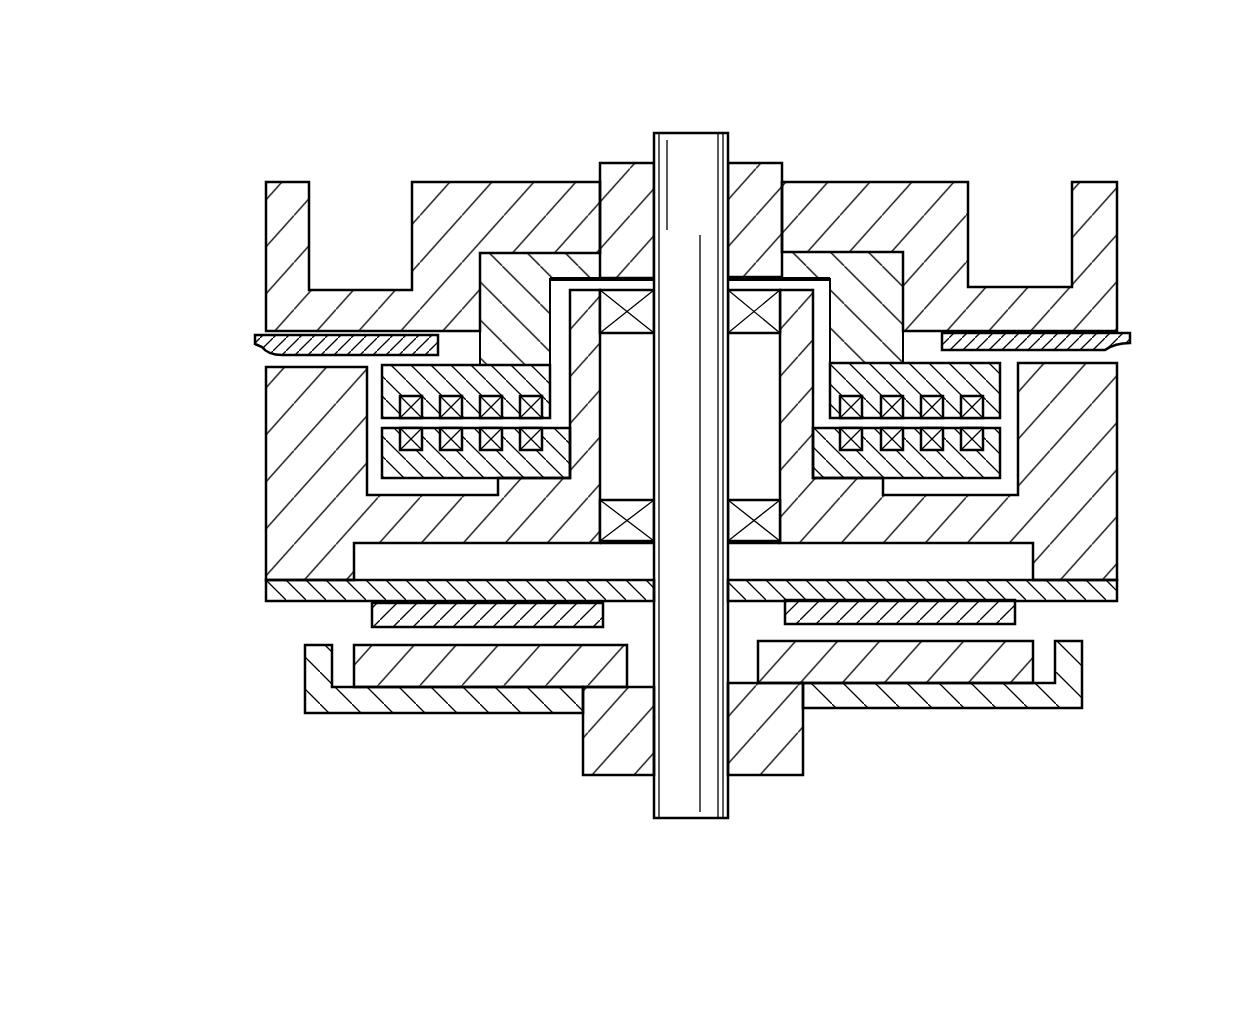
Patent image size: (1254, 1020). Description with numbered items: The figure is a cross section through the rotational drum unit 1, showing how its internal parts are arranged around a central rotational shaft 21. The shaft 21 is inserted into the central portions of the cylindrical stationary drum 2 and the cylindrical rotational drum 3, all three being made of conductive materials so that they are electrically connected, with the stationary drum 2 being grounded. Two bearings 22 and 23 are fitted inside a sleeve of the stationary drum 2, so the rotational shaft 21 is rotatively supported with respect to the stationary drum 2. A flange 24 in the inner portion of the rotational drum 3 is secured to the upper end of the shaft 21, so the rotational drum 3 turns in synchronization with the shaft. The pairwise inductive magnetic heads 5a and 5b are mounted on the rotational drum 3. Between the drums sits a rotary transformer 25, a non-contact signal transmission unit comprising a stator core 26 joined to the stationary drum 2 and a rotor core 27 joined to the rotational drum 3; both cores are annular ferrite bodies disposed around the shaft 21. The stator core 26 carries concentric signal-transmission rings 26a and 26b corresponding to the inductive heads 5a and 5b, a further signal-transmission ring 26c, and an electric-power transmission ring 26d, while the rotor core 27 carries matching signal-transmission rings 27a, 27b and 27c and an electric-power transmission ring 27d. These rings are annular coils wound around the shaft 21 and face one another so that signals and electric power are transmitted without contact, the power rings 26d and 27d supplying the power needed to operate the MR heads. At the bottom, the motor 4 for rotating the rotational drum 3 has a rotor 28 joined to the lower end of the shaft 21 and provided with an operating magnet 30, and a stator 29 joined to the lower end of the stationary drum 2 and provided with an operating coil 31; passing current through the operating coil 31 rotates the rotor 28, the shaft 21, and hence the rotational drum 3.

The rotational drum unit 1 is at (1103, 150).
The stationary drum 2 is at (1100, 532).
The rotational drum 3 is at (1098, 233).
The motor 4 is at (693, 748).
The inductive magnetic head 5a is at (1133, 333).
The inductive magnetic head 5b is at (255, 340).
The rotational shaft 21 is at (698, 153).
The bearing 22 is at (754, 291).
The bearing 23 is at (627, 508).
The flange 24 is at (753, 187).
The rotary transformer 25 is at (818, 447).
The stator core 26 is at (786, 627).
The signal-transmission ring 26a is at (851, 452).
The signal-transmission ring 26b is at (892, 452).
The signal-transmission ring 26c is at (932, 452).
The electric-power transmission ring 26d is at (972, 452).
The rotor core 27 is at (785, 242).
The signal-transmission ring 27a is at (851, 394).
The signal-transmission ring 27b is at (892, 394).
The signal-transmission ring 27c is at (932, 394).
The electric-power transmission ring 27d is at (972, 394).
The rotor 28 is at (612, 762).
The stator 29 is at (267, 587).
The operating magnet 30 is at (372, 672).
The operating coil 31 is at (372, 613).